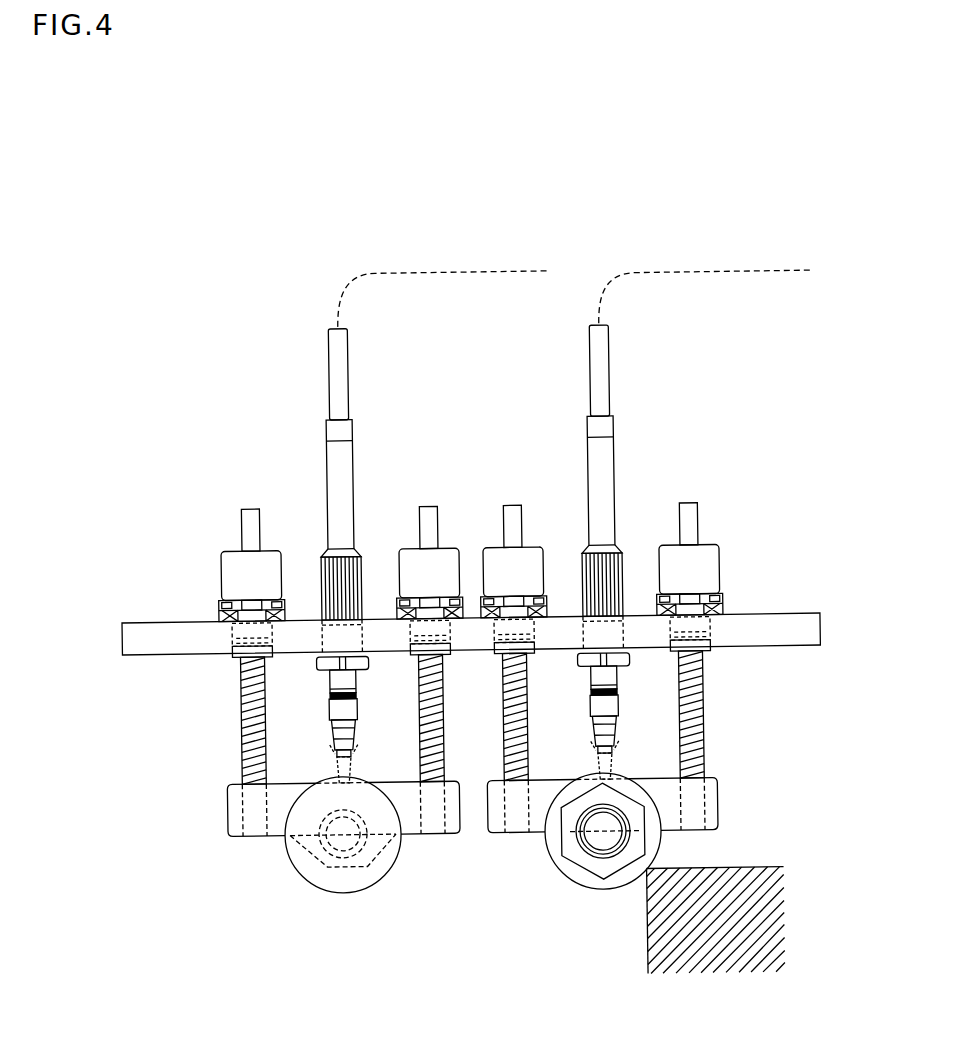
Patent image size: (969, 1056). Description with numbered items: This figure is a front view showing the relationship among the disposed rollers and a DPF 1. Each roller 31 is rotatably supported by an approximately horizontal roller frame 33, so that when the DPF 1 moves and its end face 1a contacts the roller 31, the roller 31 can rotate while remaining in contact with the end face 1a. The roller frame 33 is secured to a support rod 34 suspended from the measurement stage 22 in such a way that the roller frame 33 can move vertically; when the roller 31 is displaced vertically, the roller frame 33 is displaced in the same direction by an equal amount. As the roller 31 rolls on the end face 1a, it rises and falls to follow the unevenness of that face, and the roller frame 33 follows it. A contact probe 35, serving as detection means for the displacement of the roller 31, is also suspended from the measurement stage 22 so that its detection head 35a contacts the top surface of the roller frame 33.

The DPF 1 is at (644, 959).
The end face 1a is at (744, 876).
The measurement stage 22 is at (788, 628).
The roller 31 is at (340, 886).
The roller frame 33 is at (233, 813).
The support rod 34 is at (242, 720).
The contact probe 35 is at (329, 681).
The detection head 35a is at (333, 741).